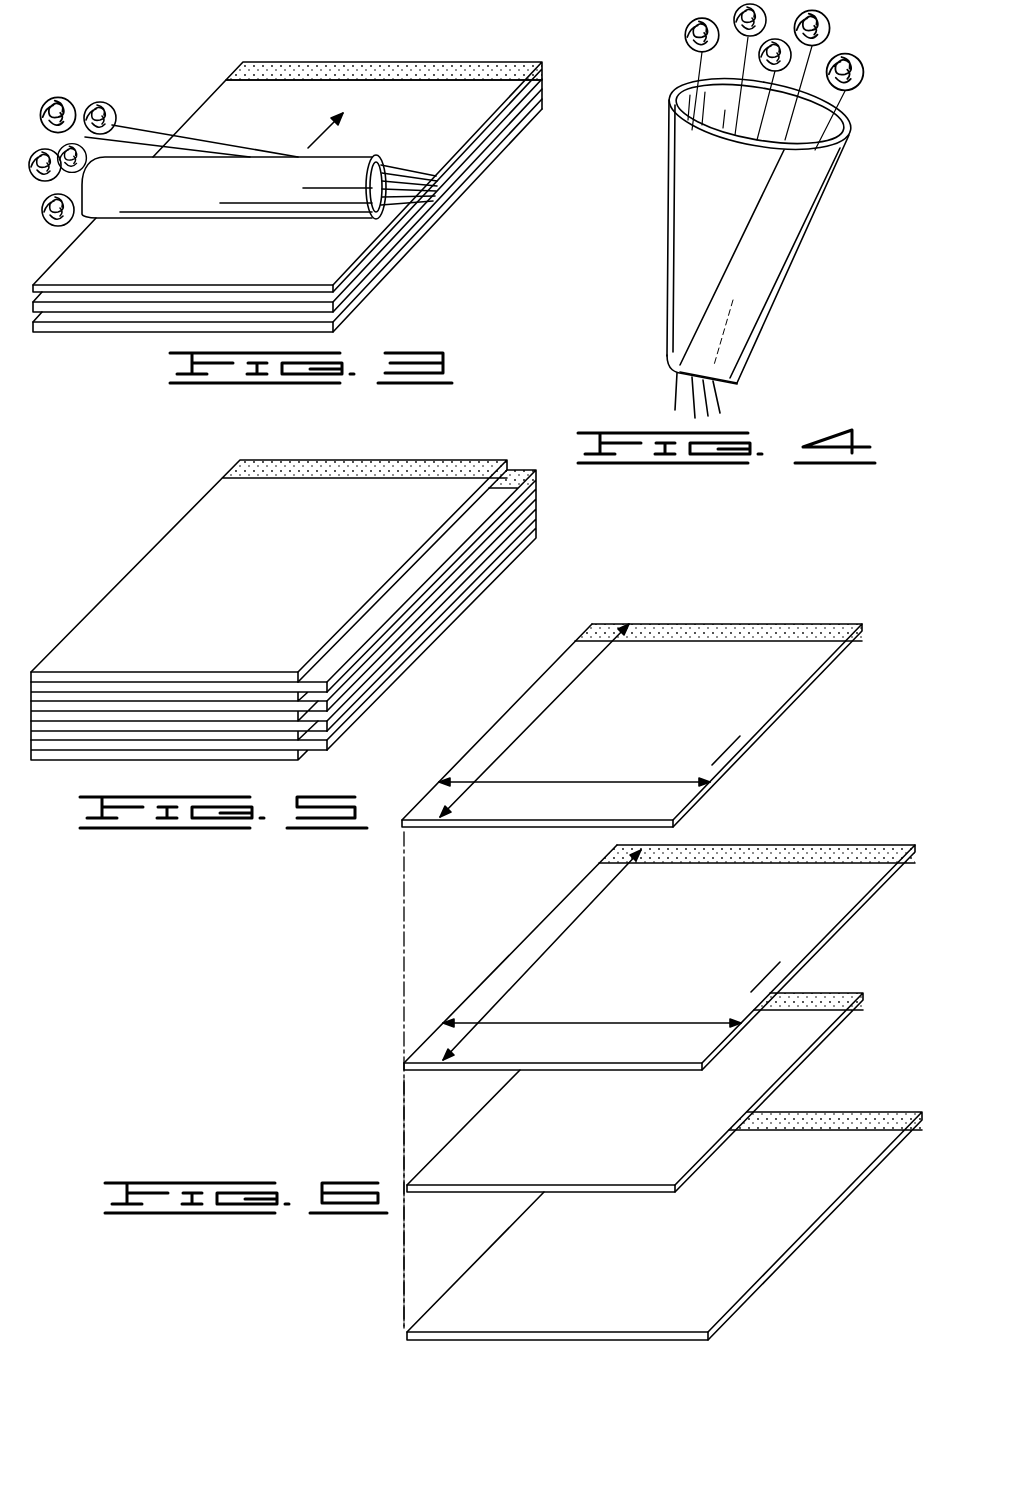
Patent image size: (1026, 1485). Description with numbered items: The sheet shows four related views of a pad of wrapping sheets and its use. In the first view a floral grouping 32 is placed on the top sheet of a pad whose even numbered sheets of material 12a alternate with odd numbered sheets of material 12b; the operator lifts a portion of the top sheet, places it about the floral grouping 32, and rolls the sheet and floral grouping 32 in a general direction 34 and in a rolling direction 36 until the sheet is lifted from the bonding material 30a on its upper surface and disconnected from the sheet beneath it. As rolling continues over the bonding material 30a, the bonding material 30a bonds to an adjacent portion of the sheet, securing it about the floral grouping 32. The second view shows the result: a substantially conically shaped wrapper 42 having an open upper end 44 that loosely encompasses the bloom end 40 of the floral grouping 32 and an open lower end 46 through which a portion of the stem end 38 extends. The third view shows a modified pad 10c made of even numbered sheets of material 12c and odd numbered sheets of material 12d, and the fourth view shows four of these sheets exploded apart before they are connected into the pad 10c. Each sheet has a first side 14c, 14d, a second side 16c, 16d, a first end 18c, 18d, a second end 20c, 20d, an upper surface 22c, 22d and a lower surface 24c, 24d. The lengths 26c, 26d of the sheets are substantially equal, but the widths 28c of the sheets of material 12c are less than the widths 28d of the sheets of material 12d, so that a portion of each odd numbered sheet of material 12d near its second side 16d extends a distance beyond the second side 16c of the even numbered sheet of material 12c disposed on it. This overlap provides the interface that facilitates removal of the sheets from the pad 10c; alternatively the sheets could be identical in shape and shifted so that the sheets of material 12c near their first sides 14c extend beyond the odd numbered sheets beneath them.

In FIG. 5, the modified pad 10c is at (320, 589).
In FIG. 3, the even numbered sheets of material 12a is at (468, 120).
In FIG. 3, the odd numbered sheets of material 12b is at (337, 253).
In FIG. 5, the even numbered sheets of material 12c is at (440, 497).
In FIG. 6, the even numbered sheets of material 12c is at (652, 887).
In FIG. 5, the odd numbered sheets of material 12d is at (467, 527).
In FIG. 6, the odd numbered sheets of material 12d is at (636, 1073).
In FIG. 6, the first side 14c is at (512, 710).
In FIG. 6, the first side edge of sheet 12d 14d is at (487, 978).
In FIG. 6, the second side 16c is at (788, 712).
In FIG. 6, the second side 16d is at (818, 946).
In FIG. 6, the adhesive strip of sheet 12c 18c is at (708, 622).
In FIG. 6, the adhesive strip of sheet 12d 18d is at (775, 845).
In FIG. 6, the front edge of sheet 12c 20c is at (472, 826).
In FIG. 6, the front edge of sheet 12d 20d is at (515, 1072).
In FIG. 6, the rear corner region of sheet 12c 22c is at (712, 765).
In FIG. 6, the rear corner region of sheet 12d 22d is at (751, 992).
In FIG. 6, the front face of sheet 12c 24c is at (537, 826).
In FIG. 6, the front face of sheet 12d 24d is at (448, 1070).
In FIG. 6, the length 26c is at (570, 694).
In FIG. 6, the length 26d is at (568, 933).
In FIG. 6, the width 28c is at (553, 782).
In FIG. 6, the width 28d is at (585, 1022).
In FIG. 3, the adhesive strip of top sheet 30a is at (415, 62).
In FIG. 3, the floral grouping 32 is at (60, 100).
In FIG. 4, the floral grouping 32 is at (838, 19).
In FIG. 3, the general direction 34 is at (313, 140).
In FIG. 3, the rolling direction 36 is at (430, 167).
In FIG. 4, the stem end 38 is at (672, 392).
In FIG. 4, the bloom end 40 is at (753, 75).
In FIG. 4, the wrapper 42 is at (751, 237).
In FIG. 4, the open upper end 44 is at (845, 133).
In FIG. 4, the open lower end 46 is at (733, 377).